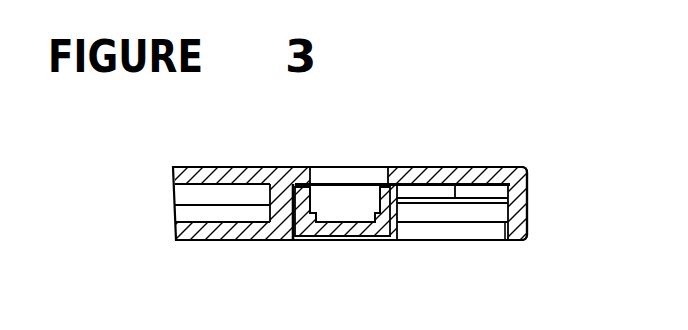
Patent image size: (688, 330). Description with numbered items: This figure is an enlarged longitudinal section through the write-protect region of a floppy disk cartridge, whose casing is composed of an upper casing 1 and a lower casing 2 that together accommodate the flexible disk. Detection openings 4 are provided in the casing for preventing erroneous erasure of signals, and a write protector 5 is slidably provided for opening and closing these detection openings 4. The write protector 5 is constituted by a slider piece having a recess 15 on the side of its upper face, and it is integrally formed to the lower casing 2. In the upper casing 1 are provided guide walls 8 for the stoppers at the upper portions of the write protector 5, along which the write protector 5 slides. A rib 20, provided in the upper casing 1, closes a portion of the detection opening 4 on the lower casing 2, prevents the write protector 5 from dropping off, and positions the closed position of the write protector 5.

The upper casing 1 is at (515, 167).
The lower casing 2 is at (527, 228).
The detection opening 4 is at (348, 167).
The write protector 5 is at (346, 240).
The guide wall 8 is at (455, 184).
The recess 15 is at (352, 212).
The rib 20 is at (270, 236).